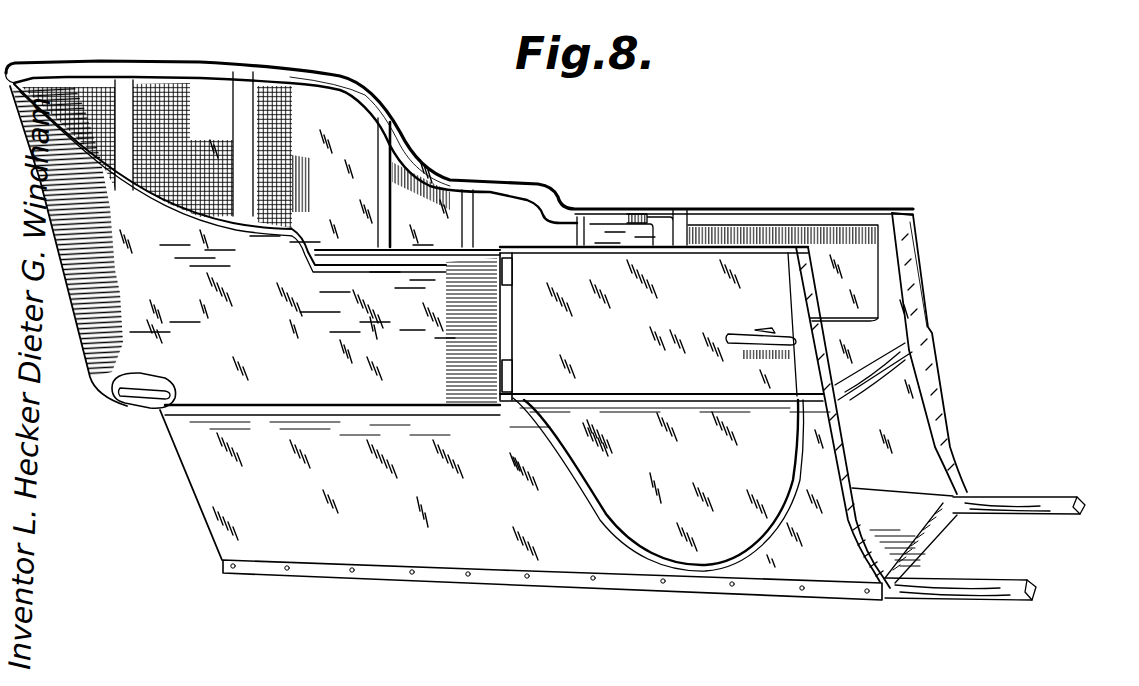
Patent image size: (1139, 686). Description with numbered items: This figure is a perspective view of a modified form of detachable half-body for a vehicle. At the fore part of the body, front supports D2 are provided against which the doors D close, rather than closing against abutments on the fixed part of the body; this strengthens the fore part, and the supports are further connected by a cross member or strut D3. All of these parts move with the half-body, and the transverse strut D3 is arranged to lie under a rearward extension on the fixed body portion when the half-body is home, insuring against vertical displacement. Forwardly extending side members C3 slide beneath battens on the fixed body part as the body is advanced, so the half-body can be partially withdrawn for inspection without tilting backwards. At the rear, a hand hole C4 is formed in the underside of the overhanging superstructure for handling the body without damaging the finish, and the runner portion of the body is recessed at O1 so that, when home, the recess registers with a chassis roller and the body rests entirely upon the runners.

The door D is at (700, 270).
The front support D2 is at (906, 281).
The cross member or strut D3 is at (906, 348).
The forwardly extending side member C3 is at (1030, 578).
The hand hole C4 is at (137, 400).
The recess O1 is at (307, 572).